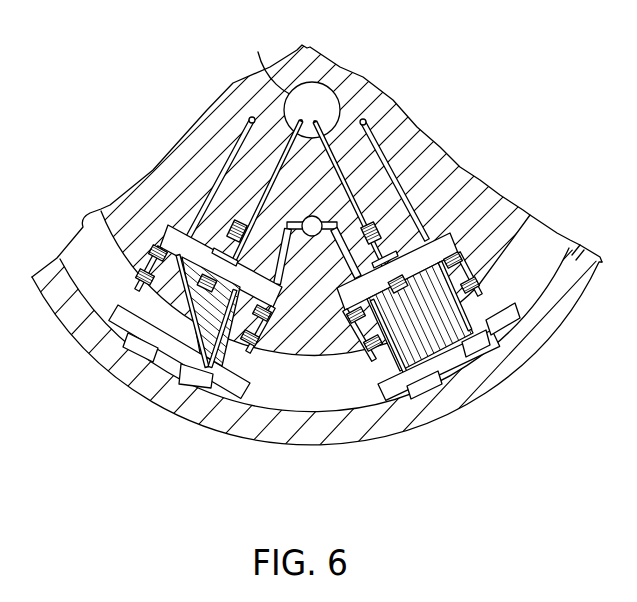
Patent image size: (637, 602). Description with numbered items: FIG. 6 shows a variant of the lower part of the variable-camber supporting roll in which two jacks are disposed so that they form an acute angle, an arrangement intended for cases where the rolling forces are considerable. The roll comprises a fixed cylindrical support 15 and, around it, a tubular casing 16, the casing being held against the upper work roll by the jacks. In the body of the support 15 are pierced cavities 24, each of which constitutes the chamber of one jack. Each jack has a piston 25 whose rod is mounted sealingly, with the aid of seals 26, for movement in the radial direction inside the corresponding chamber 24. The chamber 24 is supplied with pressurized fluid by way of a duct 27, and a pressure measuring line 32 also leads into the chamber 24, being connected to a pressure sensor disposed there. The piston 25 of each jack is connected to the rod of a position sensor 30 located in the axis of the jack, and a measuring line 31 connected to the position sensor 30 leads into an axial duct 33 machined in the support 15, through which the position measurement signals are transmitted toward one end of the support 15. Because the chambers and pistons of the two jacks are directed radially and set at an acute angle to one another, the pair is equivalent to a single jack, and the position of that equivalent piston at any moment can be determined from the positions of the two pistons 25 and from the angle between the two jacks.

The cylindrical support 15 is at (427, 157).
The tubular casing 16 is at (580, 253).
The cavity 24 is at (172, 224).
The piston 25 is at (462, 372).
The seal 26 is at (104, 213).
The duct 27 is at (313, 221).
The position sensor 30 is at (388, 236).
The measuring line 31 is at (275, 164).
The pressure measuring line 32 is at (214, 188).
The axial duct 33 is at (298, 81).